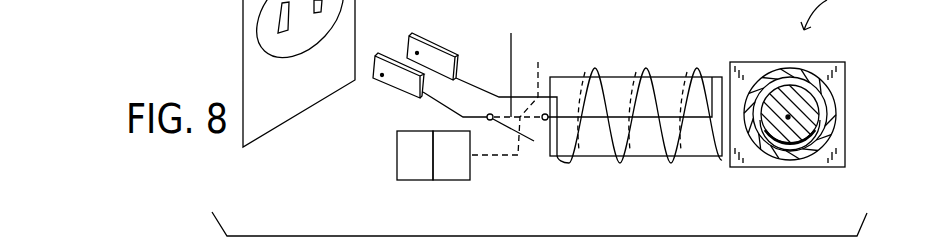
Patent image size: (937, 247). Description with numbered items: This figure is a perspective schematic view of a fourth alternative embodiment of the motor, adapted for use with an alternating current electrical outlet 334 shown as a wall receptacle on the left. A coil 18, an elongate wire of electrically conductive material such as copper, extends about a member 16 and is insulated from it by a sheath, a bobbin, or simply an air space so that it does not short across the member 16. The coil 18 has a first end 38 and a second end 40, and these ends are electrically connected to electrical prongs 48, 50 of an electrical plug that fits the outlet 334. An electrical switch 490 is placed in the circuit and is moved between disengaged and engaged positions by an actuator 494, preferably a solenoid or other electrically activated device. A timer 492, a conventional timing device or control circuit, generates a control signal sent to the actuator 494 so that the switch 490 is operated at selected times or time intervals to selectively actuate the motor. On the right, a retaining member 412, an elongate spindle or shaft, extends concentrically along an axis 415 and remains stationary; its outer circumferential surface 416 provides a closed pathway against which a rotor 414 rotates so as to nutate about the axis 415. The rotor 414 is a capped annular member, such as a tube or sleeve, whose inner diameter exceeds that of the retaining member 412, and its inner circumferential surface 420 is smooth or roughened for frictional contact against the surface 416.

The wall outlet receptacle 334 is at (646, 0).
The electrical prong 50 is at (436, 43).
The electrical prong 48 is at (397, 97).
The second end 40 is at (462, 77).
The first end 38 is at (544, 121).
The electrical switch 490 is at (513, 82).
The timer 492 is at (397, 156).
The actuator 494 is at (471, 168).
The member 16 is at (566, 77).
The coil 18 is at (621, 163).
The inner circumferential surface 420 is at (778, 88).
The rotor 414 is at (832, 114).
The axis 415 is at (793, 112).
The outer circumferential surface 416 is at (791, 150).
The retaining member 412 is at (811, 128).